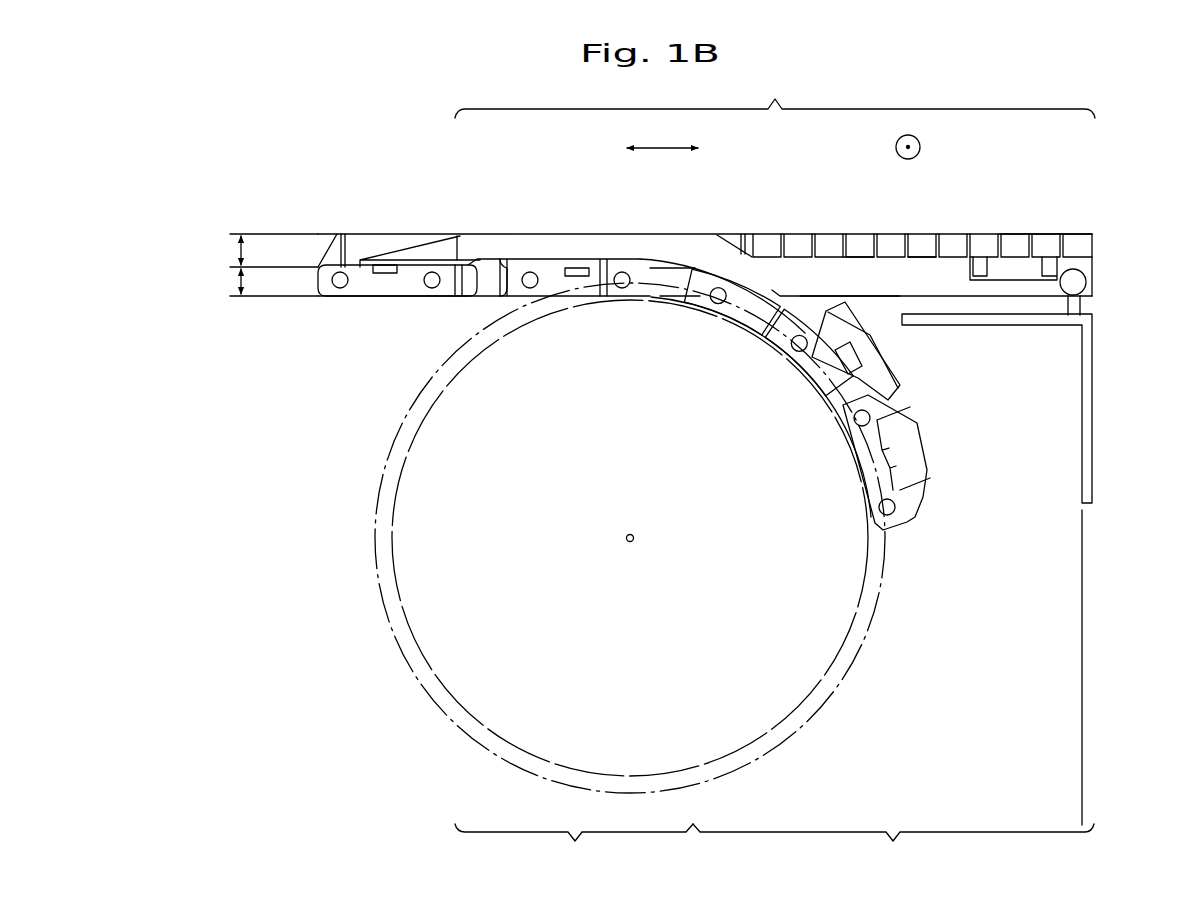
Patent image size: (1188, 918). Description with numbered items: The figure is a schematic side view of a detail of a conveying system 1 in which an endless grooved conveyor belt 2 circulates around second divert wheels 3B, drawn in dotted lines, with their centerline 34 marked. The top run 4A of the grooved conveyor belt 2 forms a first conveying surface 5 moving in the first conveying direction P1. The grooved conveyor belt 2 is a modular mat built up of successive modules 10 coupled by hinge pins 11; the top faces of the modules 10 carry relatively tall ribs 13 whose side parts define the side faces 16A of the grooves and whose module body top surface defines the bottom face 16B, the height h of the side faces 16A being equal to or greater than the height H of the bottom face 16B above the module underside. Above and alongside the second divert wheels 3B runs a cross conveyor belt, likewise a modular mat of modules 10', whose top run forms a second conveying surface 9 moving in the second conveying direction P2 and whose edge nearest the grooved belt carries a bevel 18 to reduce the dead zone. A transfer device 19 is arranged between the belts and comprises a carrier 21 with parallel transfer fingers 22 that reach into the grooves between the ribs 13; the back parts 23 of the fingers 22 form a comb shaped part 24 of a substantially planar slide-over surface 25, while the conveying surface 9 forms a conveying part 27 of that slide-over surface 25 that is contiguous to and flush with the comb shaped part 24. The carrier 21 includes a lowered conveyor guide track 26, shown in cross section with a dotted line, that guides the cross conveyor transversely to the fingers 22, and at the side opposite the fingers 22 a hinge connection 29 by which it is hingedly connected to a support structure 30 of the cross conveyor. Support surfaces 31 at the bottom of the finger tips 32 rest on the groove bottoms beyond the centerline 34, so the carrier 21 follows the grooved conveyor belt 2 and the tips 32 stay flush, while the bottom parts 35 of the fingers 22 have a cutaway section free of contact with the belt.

The conveying system 1 is at (406, 708).
The grooved conveyor belt 2 is at (936, 440).
The second divert wheels 3B is at (635, 384).
The top run 4A is at (338, 292).
The first conveying surface 5 is at (390, 231).
The second conveying surface 9 is at (825, 227).
The modules 10 is at (482, 331).
The modules of the cross conveyor belt 10' is at (1022, 215).
The hinge pins 11 is at (432, 290).
The ribs 13 is at (915, 477).
The side faces of the grooves 16A is at (356, 248).
The bottom face of the grooves 16B is at (324, 268).
The bevel 18 is at (730, 235).
The transfer device 19 is at (1100, 243).
The carrier 21 is at (869, 302).
The transfer fingers 22 is at (475, 254).
The back parts of the fingers 23 is at (548, 252).
The comb shaped part 24 is at (574, 849).
The slide-over surface 25 is at (775, 96).
The conveyor guide track 26 is at (926, 272).
The conveying part 27 is at (893, 849).
The hinge connection 29 is at (1100, 283).
The support structure 30 is at (1094, 408).
The support surfaces 31 is at (362, 285).
The tips of the fingers 32 is at (421, 226).
The centerline of the second divert wheels 34 is at (634, 536).
The bottom parts of the fingers 35 is at (779, 265).
The height of the ribs h is at (238, 250).
The height of the bottom parts of the grooves H is at (238, 282).
The first conveying direction P1 is at (662, 133).
The second conveying direction P2 is at (928, 144).